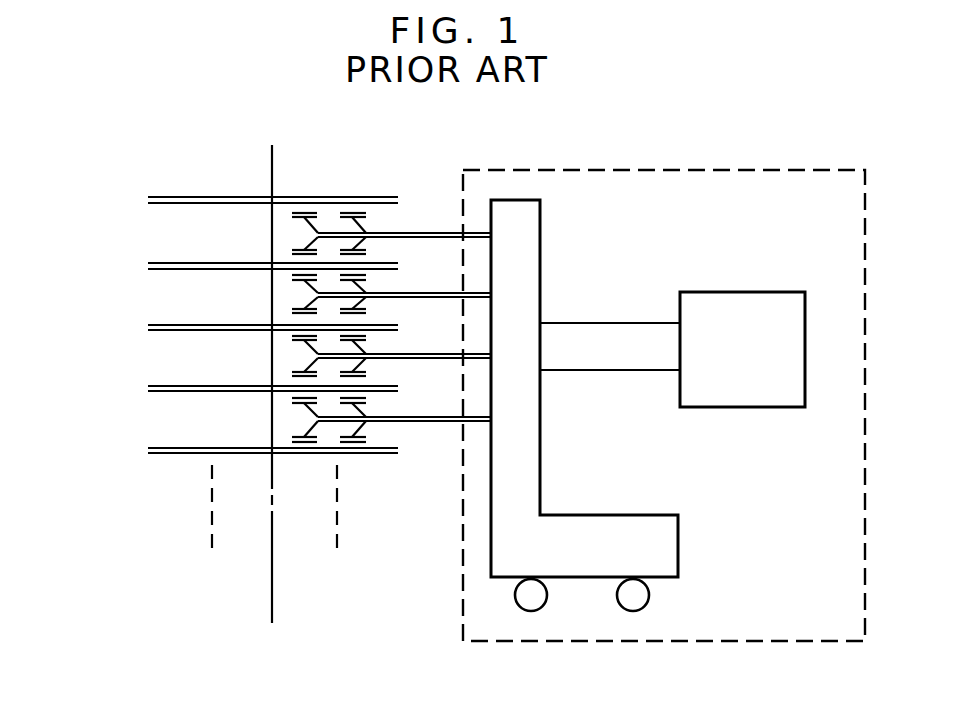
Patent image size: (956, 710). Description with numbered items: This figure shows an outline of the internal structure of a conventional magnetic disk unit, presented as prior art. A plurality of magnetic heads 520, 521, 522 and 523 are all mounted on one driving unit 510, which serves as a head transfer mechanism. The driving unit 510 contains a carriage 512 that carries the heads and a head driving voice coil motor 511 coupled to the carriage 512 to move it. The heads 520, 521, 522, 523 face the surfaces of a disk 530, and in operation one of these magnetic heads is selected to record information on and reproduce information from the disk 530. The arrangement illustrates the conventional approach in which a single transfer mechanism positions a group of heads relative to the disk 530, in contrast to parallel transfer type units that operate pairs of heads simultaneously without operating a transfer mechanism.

The driving unit 510 is at (745, 168).
The head driving voice coil motor 511 is at (735, 291).
The carriage 512 is at (542, 247).
The magnetic head 520 is at (309, 213).
The magnetic head 521 is at (362, 213).
The magnetic head 522 is at (367, 278).
The magnetic head 523 is at (367, 339).
The disk 530 is at (148, 200).